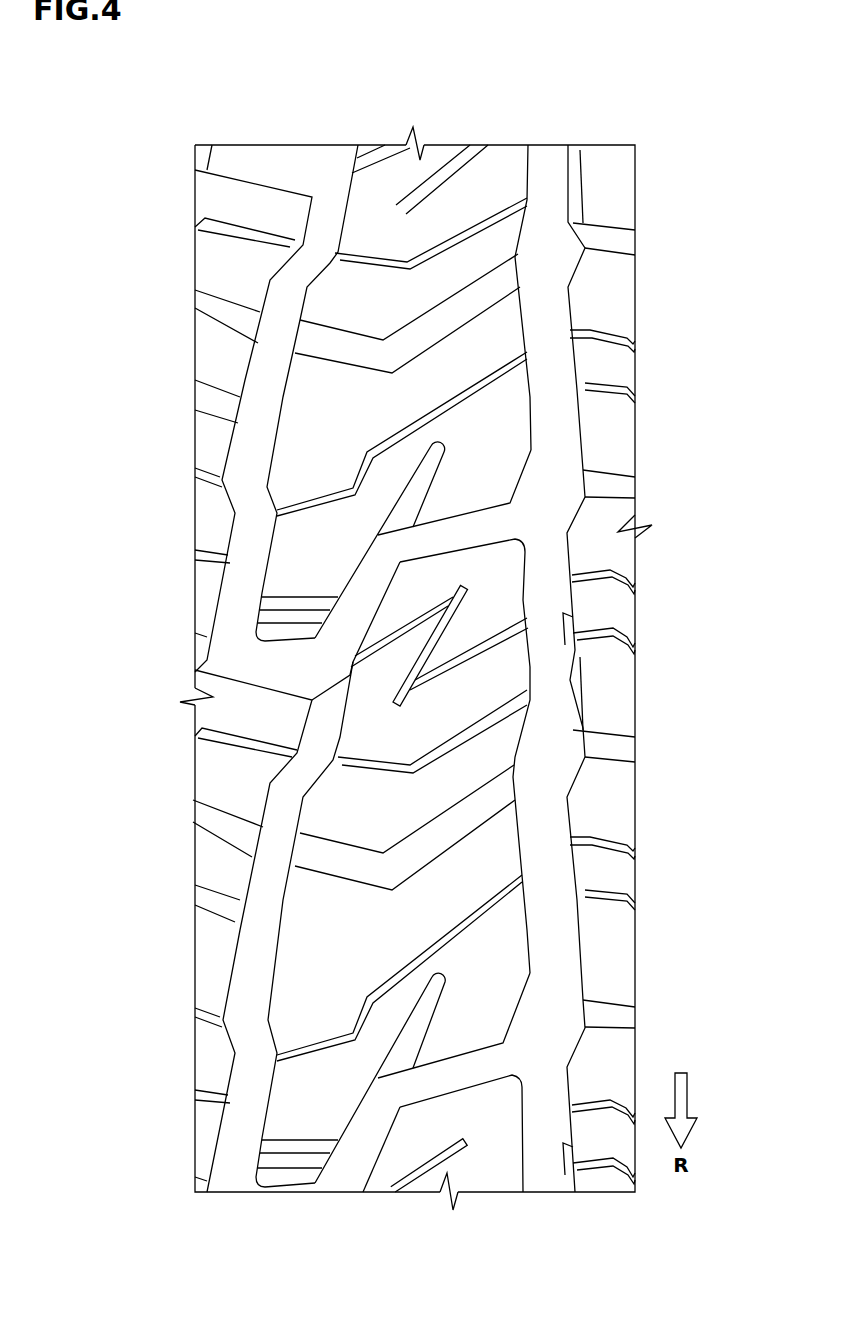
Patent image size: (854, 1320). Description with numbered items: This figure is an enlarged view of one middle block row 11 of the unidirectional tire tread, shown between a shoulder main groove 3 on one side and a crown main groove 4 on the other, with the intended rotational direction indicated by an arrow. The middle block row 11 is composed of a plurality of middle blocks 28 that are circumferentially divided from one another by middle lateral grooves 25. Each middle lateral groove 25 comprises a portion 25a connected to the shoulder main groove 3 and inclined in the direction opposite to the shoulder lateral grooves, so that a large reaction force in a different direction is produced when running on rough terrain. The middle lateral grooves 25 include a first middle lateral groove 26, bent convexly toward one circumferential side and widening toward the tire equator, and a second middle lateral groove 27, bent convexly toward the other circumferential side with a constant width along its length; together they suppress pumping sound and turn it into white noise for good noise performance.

The shoulder main groove 3 is at (548, 183).
The crown main groove 4 is at (331, 203).
The middle block row 11 is at (457, 196).
The middle lateral groove 25 is at (412, 353).
The portion connected to the shoulder main groove 25a is at (516, 287).
The first middle lateral groove 26 is at (376, 585).
The second middle lateral groove 27 is at (465, 808).
The middle block 28 is at (376, 415).